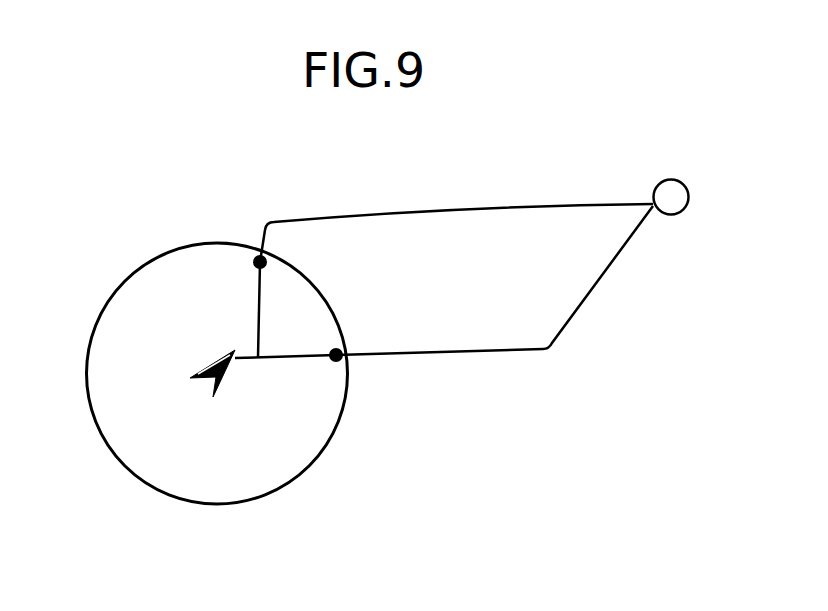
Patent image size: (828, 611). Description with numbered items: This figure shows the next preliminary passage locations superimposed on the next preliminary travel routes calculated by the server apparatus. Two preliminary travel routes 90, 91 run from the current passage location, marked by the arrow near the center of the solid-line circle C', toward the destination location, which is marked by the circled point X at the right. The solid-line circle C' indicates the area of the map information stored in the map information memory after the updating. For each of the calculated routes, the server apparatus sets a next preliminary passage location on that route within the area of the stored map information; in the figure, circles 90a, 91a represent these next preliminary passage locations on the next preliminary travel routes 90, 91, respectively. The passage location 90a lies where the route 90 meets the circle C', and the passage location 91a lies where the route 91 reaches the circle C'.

The preliminary travel route 90 is at (382, 212).
The next preliminary passage location 90a is at (257, 258).
The preliminary travel route 91 is at (411, 349).
The next preliminary passage location 91a is at (340, 361).
The solid-line circle C' is at (223, 385).
The target point X is at (671, 197).